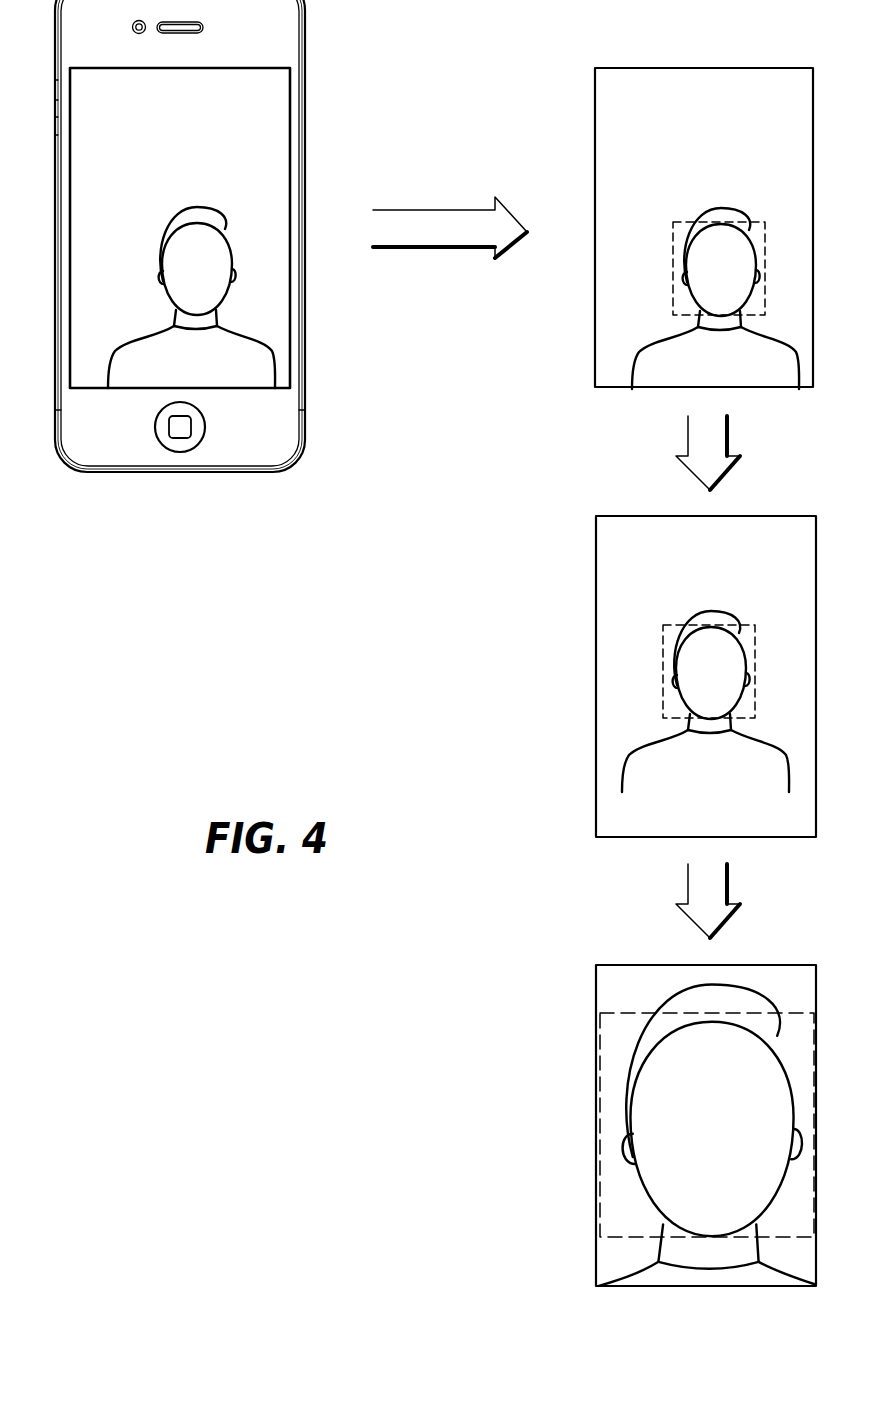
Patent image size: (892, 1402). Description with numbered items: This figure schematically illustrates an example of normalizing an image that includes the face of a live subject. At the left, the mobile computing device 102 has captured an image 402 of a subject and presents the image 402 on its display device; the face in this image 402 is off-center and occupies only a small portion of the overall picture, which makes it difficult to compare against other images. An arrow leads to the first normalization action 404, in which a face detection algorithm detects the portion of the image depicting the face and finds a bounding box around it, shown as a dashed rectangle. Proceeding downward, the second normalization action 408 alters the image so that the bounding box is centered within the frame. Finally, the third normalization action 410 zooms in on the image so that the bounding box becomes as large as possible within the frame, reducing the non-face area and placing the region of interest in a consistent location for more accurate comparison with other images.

The mobile computing device 102 is at (304, 447).
The image 402 is at (243, 176).
The first normalization action 404 is at (595, 339).
The second normalization action 408 is at (596, 735).
The third normalization action 410 is at (597, 984).